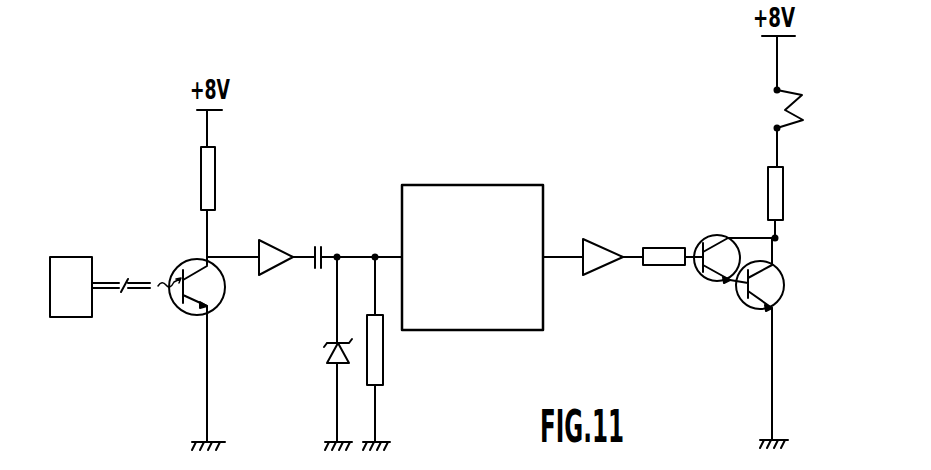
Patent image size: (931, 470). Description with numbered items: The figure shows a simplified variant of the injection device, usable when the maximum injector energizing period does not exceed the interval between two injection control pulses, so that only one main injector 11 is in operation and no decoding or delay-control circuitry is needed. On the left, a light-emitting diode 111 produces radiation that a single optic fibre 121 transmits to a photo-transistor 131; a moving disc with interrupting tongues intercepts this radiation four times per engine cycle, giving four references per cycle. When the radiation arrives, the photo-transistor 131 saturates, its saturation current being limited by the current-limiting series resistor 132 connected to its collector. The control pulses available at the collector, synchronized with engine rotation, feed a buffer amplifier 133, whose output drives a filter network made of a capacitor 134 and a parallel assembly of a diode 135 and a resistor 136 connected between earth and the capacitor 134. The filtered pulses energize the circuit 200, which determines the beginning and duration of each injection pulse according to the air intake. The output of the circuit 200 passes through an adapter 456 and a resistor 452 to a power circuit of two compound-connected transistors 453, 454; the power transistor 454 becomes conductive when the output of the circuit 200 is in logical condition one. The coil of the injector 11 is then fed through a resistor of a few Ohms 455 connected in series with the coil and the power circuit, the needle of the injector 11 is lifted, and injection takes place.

The main injector 11 is at (778, 102).
The light-emitting diode 111 is at (72, 257).
The optic fibre 121 is at (109, 283).
The photo-transistor 131 is at (186, 320).
The current-limiting series resistor 132 is at (216, 160).
The buffer amplifier 133 is at (279, 242).
The capacitor 134 is at (325, 251).
The diode 135 is at (327, 362).
The resistor 136 is at (383, 368).
The circuit 200 is at (500, 176).
The resistor 452 is at (665, 265).
The transistor 453 is at (717, 236).
The power transistor 454 is at (752, 305).
The resistor of a few Ohms 455 is at (768, 168).
The adapter 456 is at (599, 240).